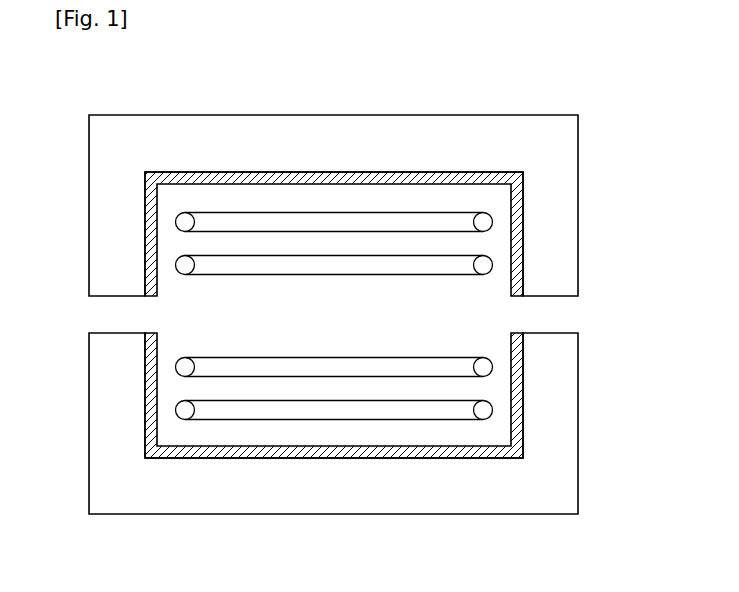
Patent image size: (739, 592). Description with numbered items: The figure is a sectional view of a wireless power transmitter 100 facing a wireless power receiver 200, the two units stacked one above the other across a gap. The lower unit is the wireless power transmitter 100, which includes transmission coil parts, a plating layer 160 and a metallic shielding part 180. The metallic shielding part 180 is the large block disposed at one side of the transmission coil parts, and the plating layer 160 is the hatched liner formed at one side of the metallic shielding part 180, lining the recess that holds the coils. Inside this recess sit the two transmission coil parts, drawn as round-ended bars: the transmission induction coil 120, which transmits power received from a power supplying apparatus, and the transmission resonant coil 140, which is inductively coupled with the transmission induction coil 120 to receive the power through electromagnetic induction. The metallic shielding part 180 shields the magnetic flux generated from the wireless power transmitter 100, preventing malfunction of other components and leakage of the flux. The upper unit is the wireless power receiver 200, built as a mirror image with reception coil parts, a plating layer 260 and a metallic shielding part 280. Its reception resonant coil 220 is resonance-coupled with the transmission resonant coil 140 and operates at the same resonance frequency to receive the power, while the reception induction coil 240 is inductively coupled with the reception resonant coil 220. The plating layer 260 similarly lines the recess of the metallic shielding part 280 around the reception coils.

The wireless power transmitter 100 is at (98, 528).
The transmission induction coil 120 is at (492, 410).
The transmission resonant coil 140 is at (492, 367).
The plating layer 160 is at (413, 459).
The metallic shielding part 180 is at (493, 497).
The wireless power receiver 200 is at (99, 104).
The reception resonant coil 220 is at (492, 265).
The reception induction coil 240 is at (492, 221).
The plating layer 260 is at (380, 172).
The metallic shielding part 280 is at (465, 130).